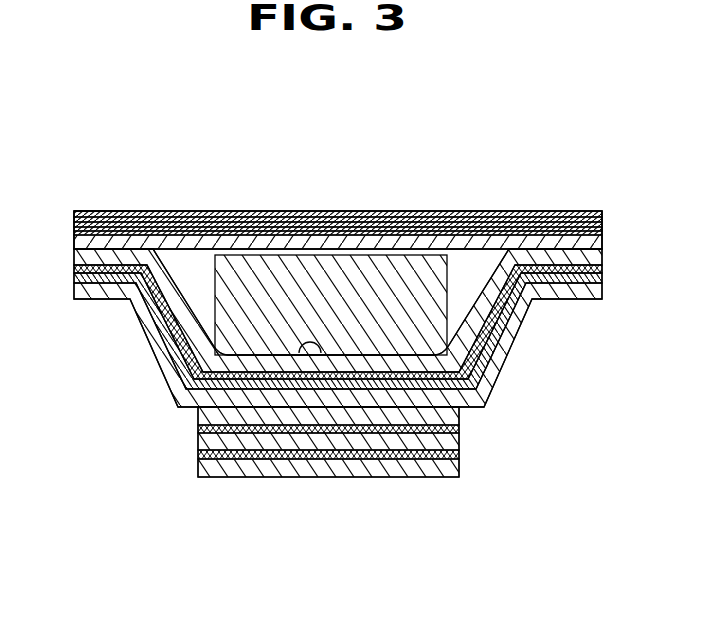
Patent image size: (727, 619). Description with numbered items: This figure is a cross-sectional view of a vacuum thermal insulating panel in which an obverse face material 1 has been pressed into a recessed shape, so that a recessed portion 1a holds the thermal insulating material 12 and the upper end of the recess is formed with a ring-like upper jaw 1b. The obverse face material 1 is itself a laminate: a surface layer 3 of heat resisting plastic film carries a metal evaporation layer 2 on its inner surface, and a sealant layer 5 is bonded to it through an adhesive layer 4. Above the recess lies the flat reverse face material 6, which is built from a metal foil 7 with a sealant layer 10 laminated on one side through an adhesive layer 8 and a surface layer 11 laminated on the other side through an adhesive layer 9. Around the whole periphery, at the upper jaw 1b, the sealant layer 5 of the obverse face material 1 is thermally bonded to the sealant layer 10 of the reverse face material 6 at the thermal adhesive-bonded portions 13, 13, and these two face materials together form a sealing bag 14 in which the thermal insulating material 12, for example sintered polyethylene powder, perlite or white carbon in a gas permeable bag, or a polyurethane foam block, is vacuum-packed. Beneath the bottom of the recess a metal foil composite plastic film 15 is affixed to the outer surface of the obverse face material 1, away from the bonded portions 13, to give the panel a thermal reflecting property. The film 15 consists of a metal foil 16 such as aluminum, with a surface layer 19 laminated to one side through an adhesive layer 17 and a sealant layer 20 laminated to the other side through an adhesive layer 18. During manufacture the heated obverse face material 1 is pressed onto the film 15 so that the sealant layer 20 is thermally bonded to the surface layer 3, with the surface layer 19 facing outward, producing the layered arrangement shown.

The obverse face material 1 is at (62, 252).
The recessed portion 1a is at (321, 353).
The ring-like upper jaw 1b is at (98, 211).
The metal evaporation layer 2 is at (593, 278).
The surface layer 3 is at (590, 292).
The adhesive layer 4 is at (590, 268).
The sealant layer 5 is at (580, 258).
The reverse face material 6 is at (62, 212).
The metal foil 7 is at (283, 218).
The adhesive layer 8 is at (236, 241).
The adhesive layer 9 is at (323, 218).
The sealant layer 10 is at (200, 246).
The surface layer 11 is at (385, 218).
The thermal insulating material 12 is at (450, 257).
The thermal adhesive-bonded portion 13 is at (126, 236).
The sealing bag 14 is at (516, 186).
The metal foil composite plastic film 15 is at (192, 443).
The metal foil 16 is at (458, 442).
The adhesive layer 17 is at (459, 455).
The adhesive layer 18 is at (458, 428).
The surface layer 19 is at (437, 468).
The sealant layer 20 is at (447, 415).